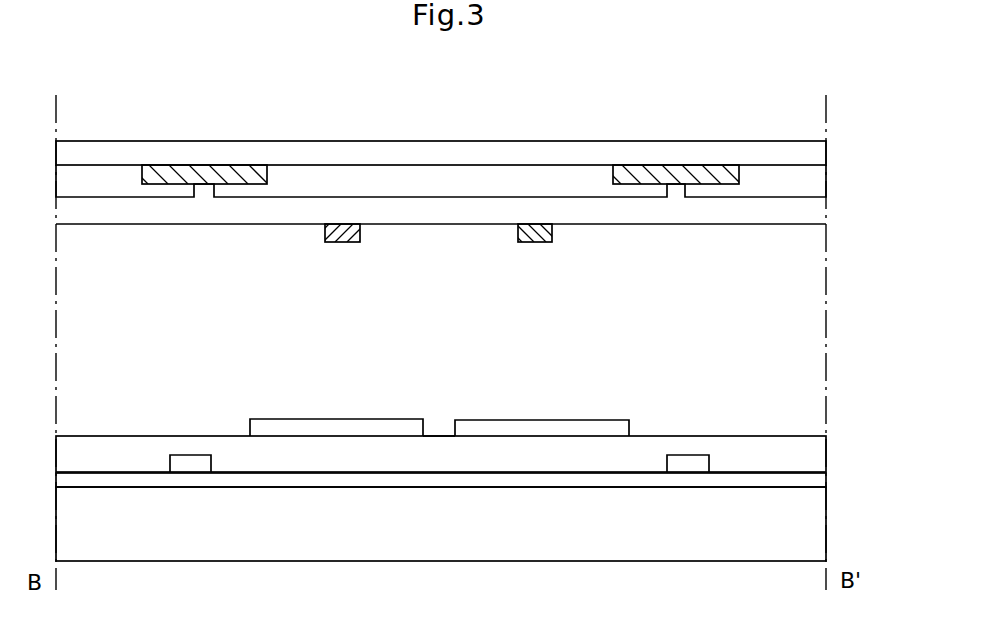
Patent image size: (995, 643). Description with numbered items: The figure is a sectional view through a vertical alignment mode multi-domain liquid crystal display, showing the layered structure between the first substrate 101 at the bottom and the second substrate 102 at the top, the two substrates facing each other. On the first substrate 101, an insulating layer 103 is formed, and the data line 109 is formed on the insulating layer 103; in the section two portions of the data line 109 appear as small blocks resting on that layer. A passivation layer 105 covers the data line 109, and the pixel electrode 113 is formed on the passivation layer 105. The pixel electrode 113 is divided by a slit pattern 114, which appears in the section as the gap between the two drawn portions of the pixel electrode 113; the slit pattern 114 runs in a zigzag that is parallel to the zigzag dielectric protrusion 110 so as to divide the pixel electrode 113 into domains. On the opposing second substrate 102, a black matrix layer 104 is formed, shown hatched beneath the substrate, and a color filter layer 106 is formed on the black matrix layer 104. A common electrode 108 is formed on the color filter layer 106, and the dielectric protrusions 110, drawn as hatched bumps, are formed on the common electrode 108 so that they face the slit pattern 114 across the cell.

The first substrate 101 is at (535, 530).
The second substrate 102 is at (775, 152).
The insulating layer 103 is at (731, 480).
The black matrix layer 104 is at (648, 175).
The passivation layer 105 is at (770, 445).
The color filter layer 106 is at (817, 178).
The common electrode 108 is at (813, 212).
The data line 109 is at (193, 449).
The dielectric protrusion 110 is at (338, 245).
The pixel electrode 113 is at (322, 418).
The slit pattern 114 is at (436, 428).